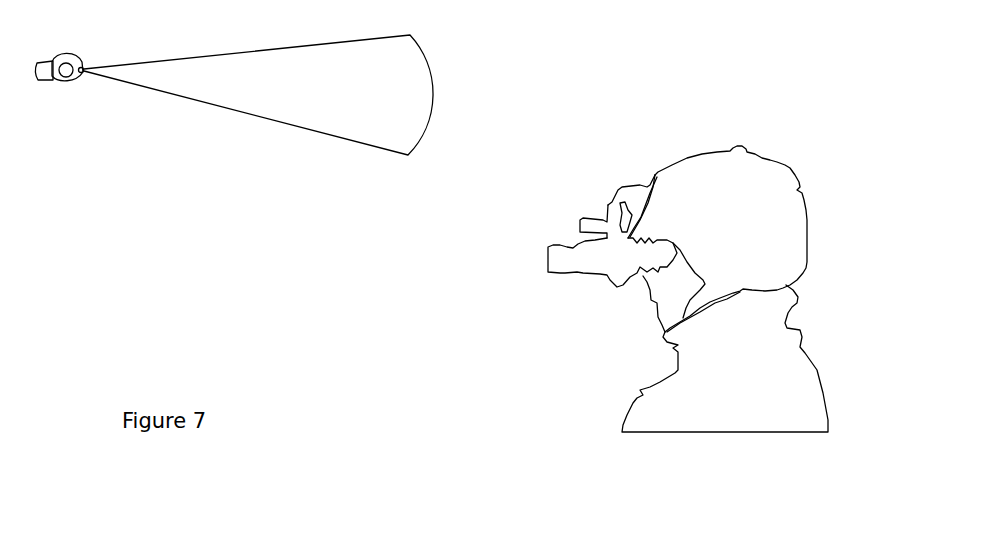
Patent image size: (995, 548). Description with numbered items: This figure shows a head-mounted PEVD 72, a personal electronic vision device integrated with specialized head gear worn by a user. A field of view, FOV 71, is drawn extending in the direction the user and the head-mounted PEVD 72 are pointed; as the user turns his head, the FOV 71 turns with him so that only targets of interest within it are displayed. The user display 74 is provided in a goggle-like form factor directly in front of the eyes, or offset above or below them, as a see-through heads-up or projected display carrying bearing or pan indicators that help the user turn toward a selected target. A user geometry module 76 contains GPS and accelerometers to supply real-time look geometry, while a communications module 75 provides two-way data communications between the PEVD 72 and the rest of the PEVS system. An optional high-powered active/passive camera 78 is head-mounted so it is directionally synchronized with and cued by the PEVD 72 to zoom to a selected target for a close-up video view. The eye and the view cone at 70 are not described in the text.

The viewer eye 70 is at (73, 54).
The FOV 71 is at (432, 63).
The head-mounted PEVD 72 is at (58, 78).
The user display 74 is at (590, 218).
The communications module 75 is at (790, 165).
The user geometry module 76 is at (642, 187).
The camera 78 is at (543, 263).